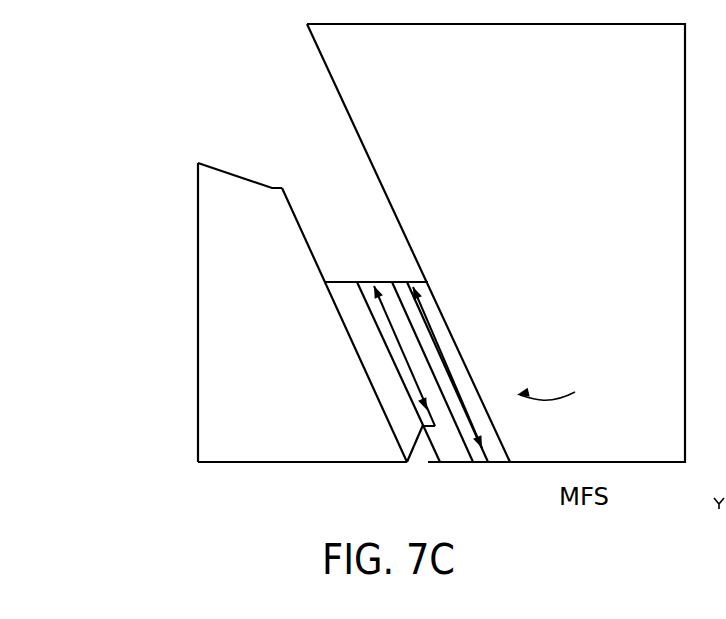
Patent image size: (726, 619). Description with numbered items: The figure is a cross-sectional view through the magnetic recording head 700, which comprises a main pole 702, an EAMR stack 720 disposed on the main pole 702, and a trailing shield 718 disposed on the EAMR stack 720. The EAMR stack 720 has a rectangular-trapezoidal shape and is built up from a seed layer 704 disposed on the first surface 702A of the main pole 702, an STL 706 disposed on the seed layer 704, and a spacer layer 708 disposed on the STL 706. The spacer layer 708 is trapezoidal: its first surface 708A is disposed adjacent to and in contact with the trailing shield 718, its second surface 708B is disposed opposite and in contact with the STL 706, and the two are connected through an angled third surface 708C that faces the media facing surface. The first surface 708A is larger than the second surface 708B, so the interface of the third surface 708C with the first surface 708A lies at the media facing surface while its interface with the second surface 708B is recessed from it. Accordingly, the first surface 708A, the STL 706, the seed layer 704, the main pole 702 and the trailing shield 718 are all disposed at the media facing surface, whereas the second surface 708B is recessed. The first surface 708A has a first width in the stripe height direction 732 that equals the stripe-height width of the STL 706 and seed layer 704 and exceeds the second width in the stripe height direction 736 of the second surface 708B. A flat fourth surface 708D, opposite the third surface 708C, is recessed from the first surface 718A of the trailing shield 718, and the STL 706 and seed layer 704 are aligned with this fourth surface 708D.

The magnetic recording head 700 is at (113, 84).
The main pole 702 is at (446, 236).
The first surface of the main pole 702A is at (323, 60).
The seed layer 704 is at (432, 310).
The STL 706 is at (387, 300).
The spacer layer 708 is at (399, 321).
The first surface of the spacer layer 708A is at (340, 317).
The second surface of the spacer layer 708B is at (383, 340).
The third surface of the spacer layer 708C is at (422, 435).
The fourth surface of the spacer layer 708D is at (334, 278).
The trailing shield 718 is at (291, 274).
The first surface of the trailing shield 718A is at (273, 187).
The EAMR stack 720 is at (569, 387).
The first width in the stripe height direction 732 is at (445, 362).
The second width in the stripe height direction 736 is at (403, 368).